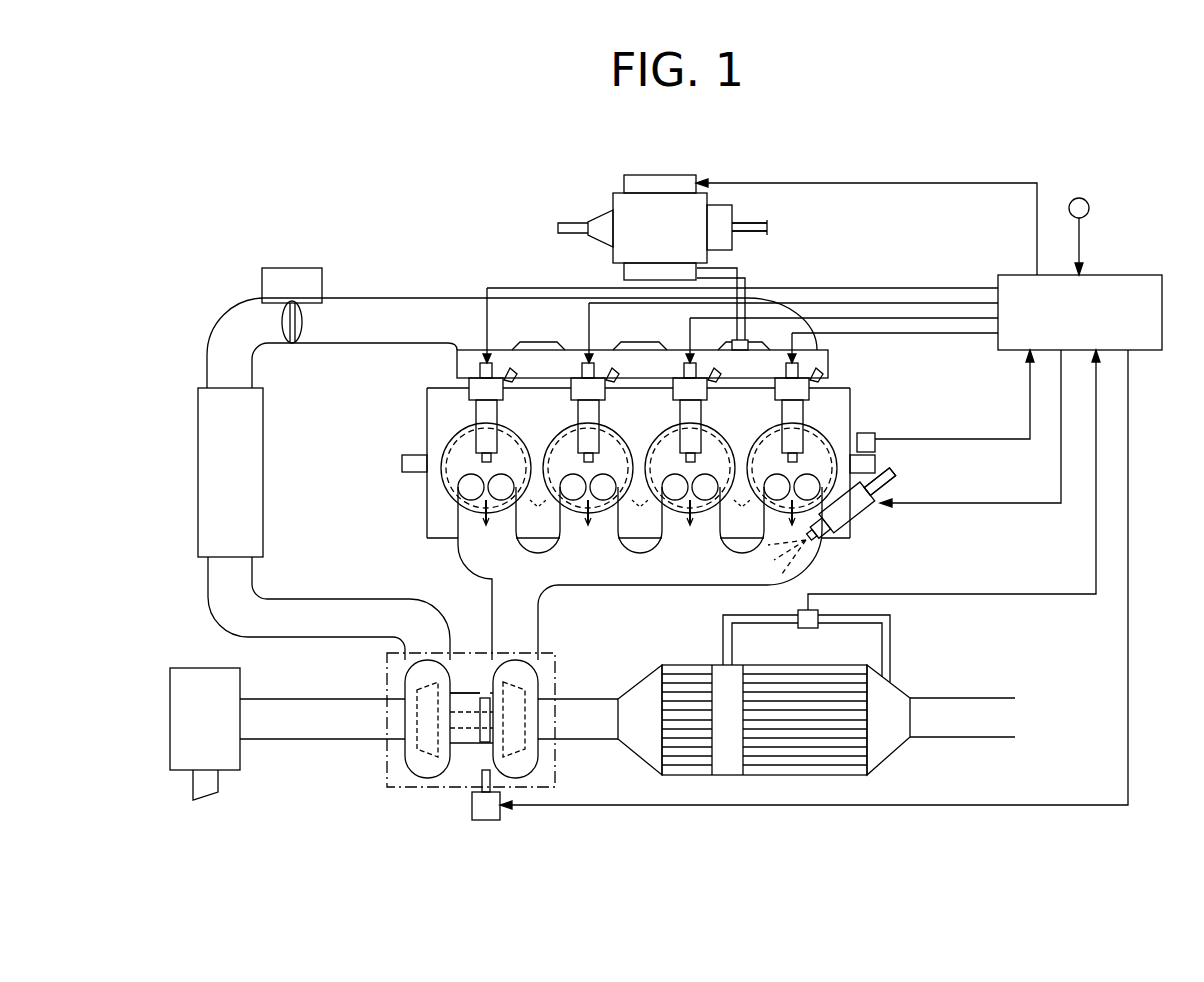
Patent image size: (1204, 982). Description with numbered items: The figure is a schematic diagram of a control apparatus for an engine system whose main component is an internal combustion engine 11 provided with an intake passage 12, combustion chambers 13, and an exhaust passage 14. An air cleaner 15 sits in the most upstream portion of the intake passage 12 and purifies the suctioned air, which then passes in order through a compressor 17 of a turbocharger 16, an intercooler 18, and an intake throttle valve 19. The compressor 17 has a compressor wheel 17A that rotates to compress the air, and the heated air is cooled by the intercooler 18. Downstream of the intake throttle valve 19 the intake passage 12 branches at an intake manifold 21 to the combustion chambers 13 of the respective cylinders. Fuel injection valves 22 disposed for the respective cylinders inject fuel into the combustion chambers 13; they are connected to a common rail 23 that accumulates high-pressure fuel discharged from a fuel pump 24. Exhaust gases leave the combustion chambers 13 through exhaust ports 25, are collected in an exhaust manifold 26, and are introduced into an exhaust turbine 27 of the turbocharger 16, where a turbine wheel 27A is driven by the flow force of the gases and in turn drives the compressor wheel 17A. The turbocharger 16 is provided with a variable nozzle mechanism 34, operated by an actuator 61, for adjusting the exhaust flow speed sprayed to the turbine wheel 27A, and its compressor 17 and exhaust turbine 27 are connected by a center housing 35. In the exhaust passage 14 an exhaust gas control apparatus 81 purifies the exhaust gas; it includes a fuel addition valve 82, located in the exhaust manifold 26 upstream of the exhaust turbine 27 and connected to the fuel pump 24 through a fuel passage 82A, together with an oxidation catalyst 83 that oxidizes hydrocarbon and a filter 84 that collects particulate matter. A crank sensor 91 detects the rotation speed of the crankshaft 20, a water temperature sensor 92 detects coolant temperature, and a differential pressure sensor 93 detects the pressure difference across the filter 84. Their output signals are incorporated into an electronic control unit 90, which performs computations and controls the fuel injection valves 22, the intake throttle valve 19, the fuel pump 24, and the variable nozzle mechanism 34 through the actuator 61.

The internal combustion engine 11 is at (870, 378).
The intake passage 12 is at (400, 298).
The combustion chambers 13 is at (639, 480).
The exhaust passage 14 is at (540, 630).
The air cleaner 15 is at (197, 668).
The turbocharger 16 is at (387, 672).
The compressor 17 is at (405, 770).
The compressor wheel 17A is at (417, 737).
The intercooler 18 is at (198, 469).
The intake throttle valve 19 is at (282, 322).
The crankshaft 20 is at (875, 465).
The intake manifold 21 is at (532, 298).
The fuel injection valves 22 is at (503, 396).
The common rail 23 is at (457, 364).
The fuel pump 24 is at (613, 198).
The exhaust ports 25 is at (604, 522).
The exhaust manifold 26 is at (814, 566).
The exhaust turbine 27 is at (540, 776).
The turbine wheel 27A is at (538, 745).
The variable nozzle mechanism 34 is at (483, 745).
The center housing 35 is at (463, 693).
The actuator 61 is at (472, 806).
The exhaust gas control apparatus 81 is at (915, 658).
The fuel addition valve 82 is at (873, 514).
The fuel passage 82A is at (748, 223).
The oxidation catalyst 83 is at (682, 668).
The filter 84 is at (790, 668).
The electronic control unit 90 is at (1150, 350).
The crank sensor 91 is at (866, 433).
The water temperature sensor 92 is at (1080, 198).
The differential pressure sensor 93 is at (818, 628).